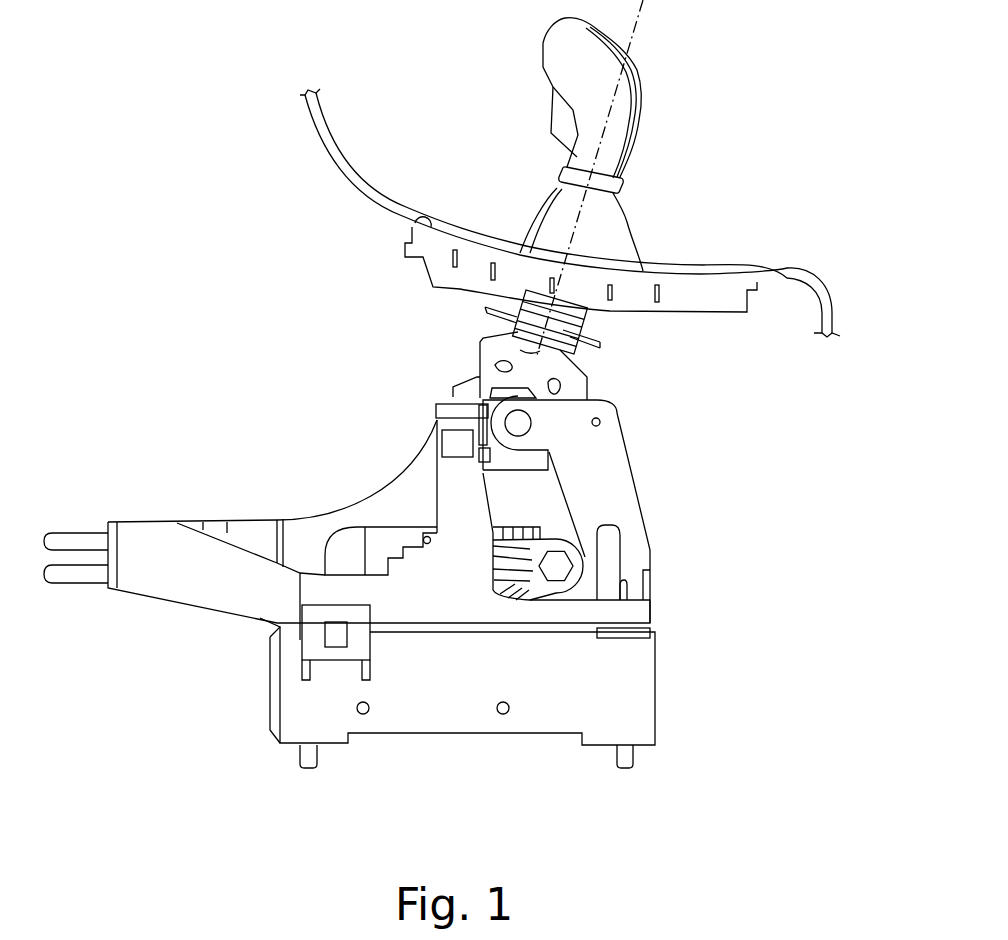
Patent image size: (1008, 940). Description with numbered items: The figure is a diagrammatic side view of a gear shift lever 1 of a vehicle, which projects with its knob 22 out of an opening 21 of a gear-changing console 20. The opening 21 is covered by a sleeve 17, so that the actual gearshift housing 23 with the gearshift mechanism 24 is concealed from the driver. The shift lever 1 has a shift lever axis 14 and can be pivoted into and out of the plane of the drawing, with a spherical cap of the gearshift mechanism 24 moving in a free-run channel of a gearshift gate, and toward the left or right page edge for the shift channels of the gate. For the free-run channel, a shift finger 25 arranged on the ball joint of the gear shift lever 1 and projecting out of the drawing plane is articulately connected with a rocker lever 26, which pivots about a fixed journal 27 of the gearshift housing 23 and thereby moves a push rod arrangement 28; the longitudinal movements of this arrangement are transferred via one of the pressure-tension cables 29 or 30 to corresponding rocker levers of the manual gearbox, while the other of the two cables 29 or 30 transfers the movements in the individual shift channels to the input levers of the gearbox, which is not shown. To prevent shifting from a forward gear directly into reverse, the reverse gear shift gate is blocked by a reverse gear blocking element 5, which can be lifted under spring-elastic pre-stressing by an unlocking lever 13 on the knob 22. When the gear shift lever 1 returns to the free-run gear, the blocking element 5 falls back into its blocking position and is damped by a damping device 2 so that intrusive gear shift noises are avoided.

The gear shift lever 1 is at (604, 177).
The damping device 2 is at (583, 332).
The reverse gear blocking element 5 is at (505, 325).
The unlocking lever 13 is at (560, 113).
The shift lever axis 14 is at (647, 12).
The sleeve 17 is at (610, 237).
The gear-changing console 20 is at (586, 207).
The opening 21 is at (734, 271).
The knob 22 is at (627, 98).
The gearshift housing 23 is at (653, 580).
The gearshift mechanism 24 is at (550, 498).
The shift finger 25 is at (523, 413).
The rocker lever 26 is at (627, 518).
The fixed journal 27 is at (602, 422).
The push rod arrangement 28 is at (493, 573).
The pressure-tension cable 29 is at (95, 578).
The pressure-tension cable 30 is at (185, 561).